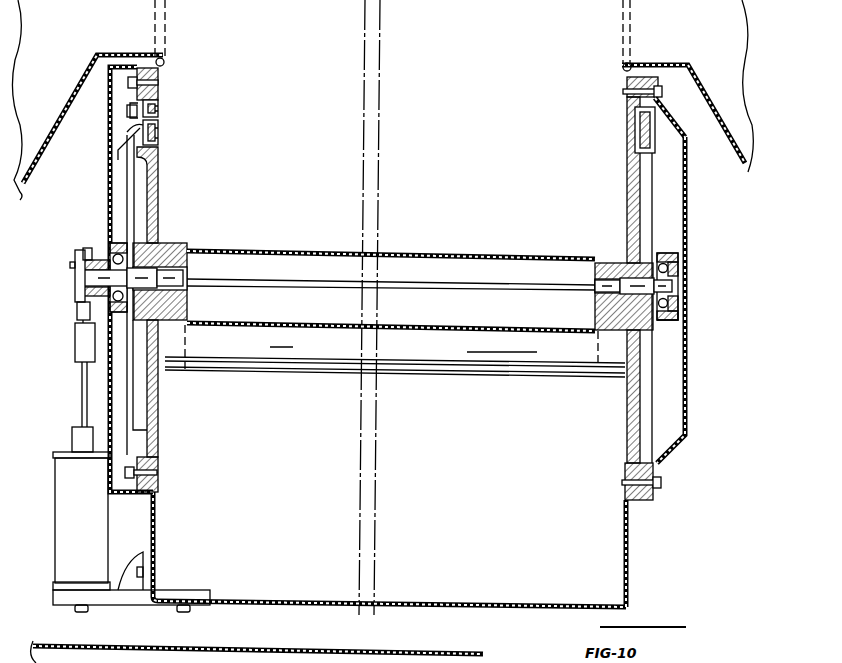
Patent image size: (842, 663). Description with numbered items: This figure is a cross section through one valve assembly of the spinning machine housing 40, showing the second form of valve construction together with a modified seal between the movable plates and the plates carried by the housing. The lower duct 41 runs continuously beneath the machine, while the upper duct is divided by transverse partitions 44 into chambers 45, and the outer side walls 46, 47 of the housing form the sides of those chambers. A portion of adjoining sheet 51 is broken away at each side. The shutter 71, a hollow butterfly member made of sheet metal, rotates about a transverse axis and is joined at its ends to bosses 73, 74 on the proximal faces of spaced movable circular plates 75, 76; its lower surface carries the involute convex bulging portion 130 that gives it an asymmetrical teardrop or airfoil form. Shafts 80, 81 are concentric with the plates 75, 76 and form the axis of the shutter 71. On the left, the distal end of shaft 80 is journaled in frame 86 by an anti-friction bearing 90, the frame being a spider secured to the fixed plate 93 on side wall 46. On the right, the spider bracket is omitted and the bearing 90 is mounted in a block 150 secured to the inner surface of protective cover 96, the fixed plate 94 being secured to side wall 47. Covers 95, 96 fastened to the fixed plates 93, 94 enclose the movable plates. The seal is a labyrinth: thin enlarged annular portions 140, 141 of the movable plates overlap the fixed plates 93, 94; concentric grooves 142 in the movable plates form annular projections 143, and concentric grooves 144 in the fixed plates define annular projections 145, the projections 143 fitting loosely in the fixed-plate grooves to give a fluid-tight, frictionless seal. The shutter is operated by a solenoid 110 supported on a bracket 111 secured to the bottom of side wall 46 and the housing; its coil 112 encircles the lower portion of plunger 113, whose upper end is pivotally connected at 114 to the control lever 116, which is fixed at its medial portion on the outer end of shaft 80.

The housing 40 is at (392, 323).
The lower duct 41 is at (462, 600).
The transverse partition 44 is at (437, 119).
The chamber 45 is at (310, 650).
The outer side wall 46 is at (157, 530).
The outer side wall 47 is at (623, 548).
The sheet panel 51 is at (740, 166).
The shutter 71 is at (323, 250).
The boss 73 is at (178, 248).
The boss 74 is at (606, 262).
The movable circular plate 75 is at (160, 200).
The movable circular plate 76 is at (628, 192).
The shaft 80 is at (187, 292).
The shaft 81 is at (640, 305).
The frame 86 is at (118, 190).
The anti-friction bearing 90 is at (110, 250).
The fixed plate 93 is at (165, 64).
The fixed plate 94 is at (622, 74).
The protective cover 95 is at (126, 112).
The protective cover 96 is at (688, 215).
The solenoid 110 is at (112, 525).
The bracket 111 is at (112, 600).
The coil 112 is at (90, 536).
The solenoid plunger 113 is at (82, 408).
The pivotal connection 114 is at (75, 265).
The control lever 116 is at (78, 302).
The convex bulging portion 130 is at (330, 375).
The enlarged annular portion 140 is at (127, 132).
The enlarged annular portion 141 is at (662, 132).
The concentric groove 142 is at (143, 110).
The annular projection 143 is at (158, 107).
The concentric groove 144 is at (160, 100).
The annular projection 145 is at (158, 113).
The block 150 is at (668, 318).